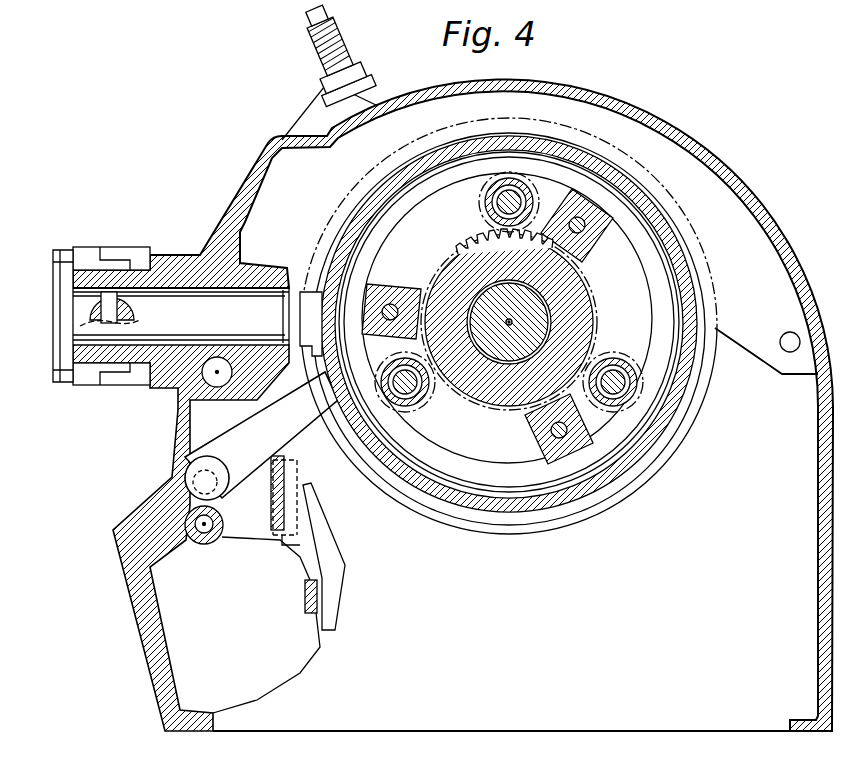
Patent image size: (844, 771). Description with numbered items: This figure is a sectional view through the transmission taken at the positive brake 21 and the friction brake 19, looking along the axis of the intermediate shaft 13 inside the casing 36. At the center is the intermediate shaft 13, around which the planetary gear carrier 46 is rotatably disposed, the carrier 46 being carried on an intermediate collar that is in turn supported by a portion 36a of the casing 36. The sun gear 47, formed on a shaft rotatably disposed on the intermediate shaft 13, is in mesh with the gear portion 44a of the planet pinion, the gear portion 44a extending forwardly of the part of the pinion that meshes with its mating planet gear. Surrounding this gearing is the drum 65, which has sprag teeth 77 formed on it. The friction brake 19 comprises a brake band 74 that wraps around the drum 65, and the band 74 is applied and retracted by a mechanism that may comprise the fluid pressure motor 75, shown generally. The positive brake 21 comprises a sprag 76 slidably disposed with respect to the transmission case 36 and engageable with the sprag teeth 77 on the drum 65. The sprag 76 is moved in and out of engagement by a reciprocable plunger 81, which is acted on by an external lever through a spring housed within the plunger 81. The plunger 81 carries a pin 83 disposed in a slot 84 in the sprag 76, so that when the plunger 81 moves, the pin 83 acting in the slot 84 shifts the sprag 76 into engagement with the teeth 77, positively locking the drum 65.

The intermediate shaft 13 is at (508, 348).
The friction brake 19 is at (658, 482).
The positive brake 21 is at (302, 258).
The casing 36 is at (714, 160).
The portion of the casing 36a is at (752, 345).
The gear portion 44a is at (528, 200).
The planetary gear carrier 46 is at (540, 442).
The sun gear 47 is at (482, 238).
The drum 65 is at (352, 230).
The brake band 74 is at (566, 520).
The fluid pressure motor 75 is at (312, 660).
The sprag 76 is at (187, 292).
The sprag teeth 77 is at (312, 342).
The reciprocable plunger 81 is at (84, 310).
The pin 83 is at (112, 296).
The slot 84 is at (66, 322).